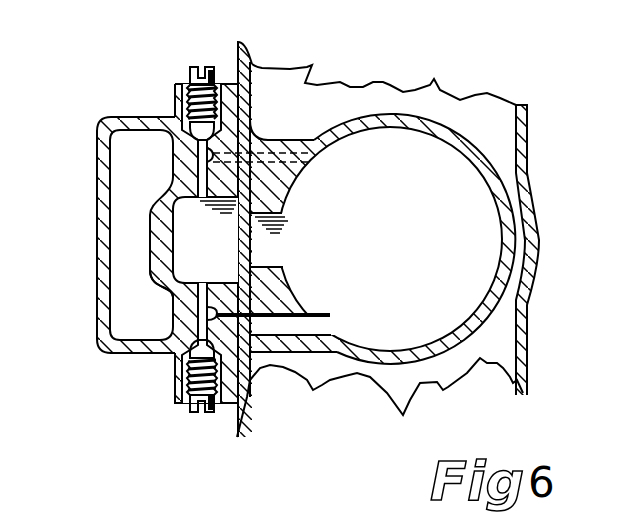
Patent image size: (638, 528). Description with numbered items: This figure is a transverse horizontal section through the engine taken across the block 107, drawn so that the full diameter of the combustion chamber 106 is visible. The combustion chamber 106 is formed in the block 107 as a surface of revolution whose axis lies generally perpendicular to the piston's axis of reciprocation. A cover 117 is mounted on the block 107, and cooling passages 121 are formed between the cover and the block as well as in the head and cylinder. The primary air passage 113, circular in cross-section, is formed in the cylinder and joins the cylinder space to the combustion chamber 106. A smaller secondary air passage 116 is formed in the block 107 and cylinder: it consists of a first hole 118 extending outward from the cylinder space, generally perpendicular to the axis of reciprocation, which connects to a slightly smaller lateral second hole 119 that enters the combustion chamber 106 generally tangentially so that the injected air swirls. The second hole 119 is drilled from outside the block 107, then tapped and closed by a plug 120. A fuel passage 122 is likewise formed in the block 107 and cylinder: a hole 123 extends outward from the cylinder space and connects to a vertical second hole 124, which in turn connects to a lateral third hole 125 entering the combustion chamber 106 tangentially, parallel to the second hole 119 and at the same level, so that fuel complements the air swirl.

The combustion chamber 106 is at (183, 253).
The block 107 is at (160, 343).
The primary air passage 113 is at (263, 265).
The secondary air passage 116 is at (262, 350).
The cover 117 is at (97, 160).
The first hole 118 is at (300, 323).
The second hole 119 is at (173, 288).
The plug 120 is at (197, 67).
The cooling passages 121 is at (506, 157).
The fuel passage 122 is at (243, 123).
The hole 123 is at (310, 158).
The vertical second hole 124 is at (177, 130).
The lateral third hole 125 is at (203, 172).